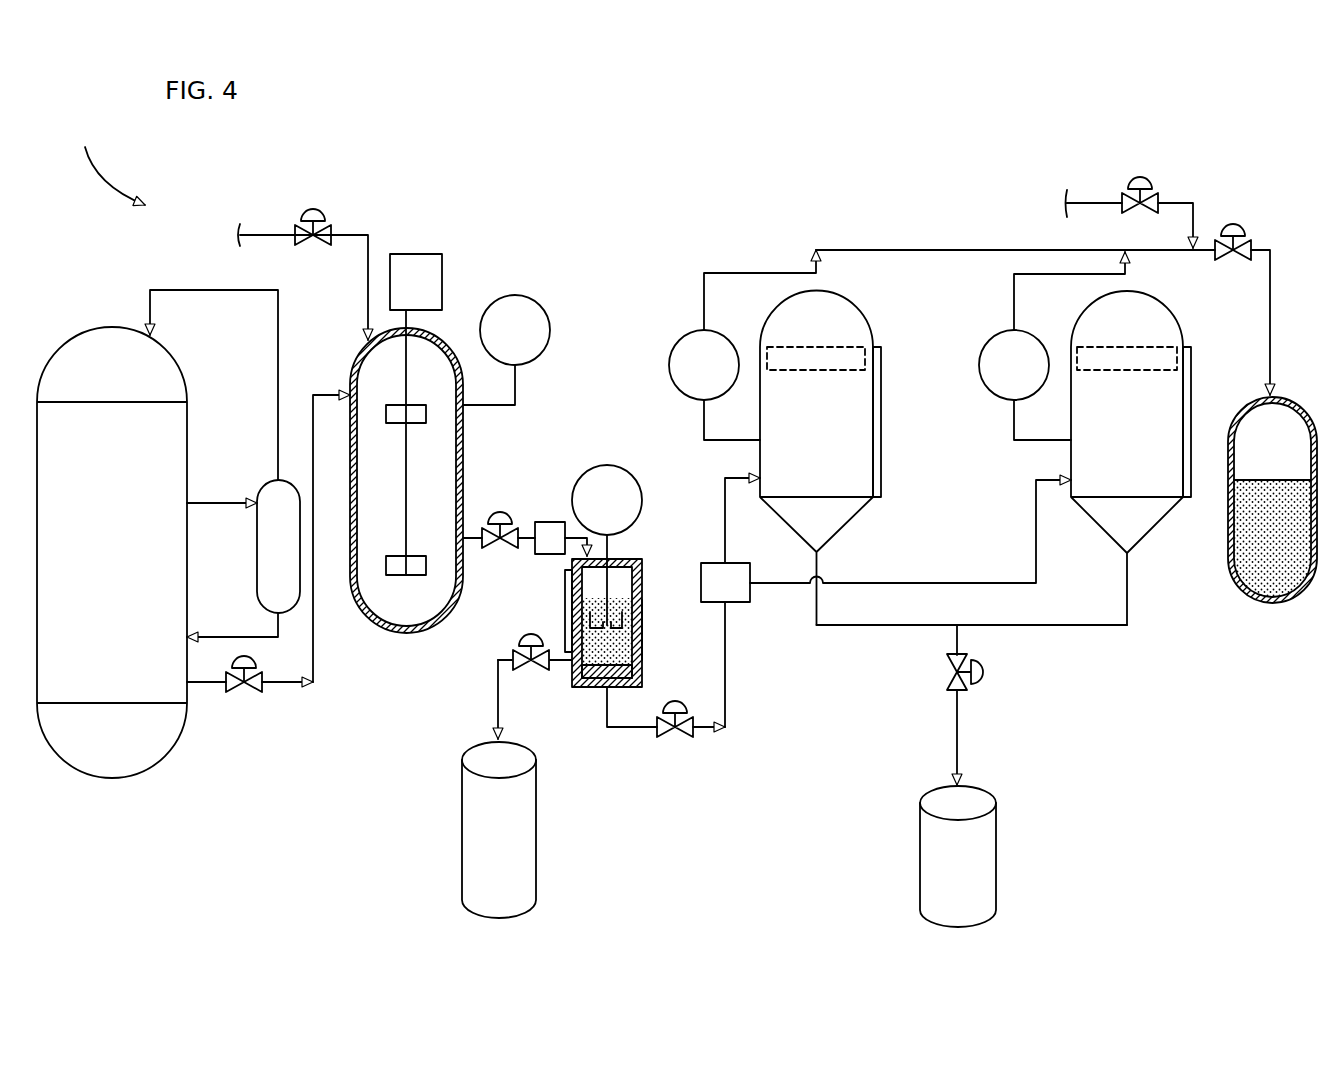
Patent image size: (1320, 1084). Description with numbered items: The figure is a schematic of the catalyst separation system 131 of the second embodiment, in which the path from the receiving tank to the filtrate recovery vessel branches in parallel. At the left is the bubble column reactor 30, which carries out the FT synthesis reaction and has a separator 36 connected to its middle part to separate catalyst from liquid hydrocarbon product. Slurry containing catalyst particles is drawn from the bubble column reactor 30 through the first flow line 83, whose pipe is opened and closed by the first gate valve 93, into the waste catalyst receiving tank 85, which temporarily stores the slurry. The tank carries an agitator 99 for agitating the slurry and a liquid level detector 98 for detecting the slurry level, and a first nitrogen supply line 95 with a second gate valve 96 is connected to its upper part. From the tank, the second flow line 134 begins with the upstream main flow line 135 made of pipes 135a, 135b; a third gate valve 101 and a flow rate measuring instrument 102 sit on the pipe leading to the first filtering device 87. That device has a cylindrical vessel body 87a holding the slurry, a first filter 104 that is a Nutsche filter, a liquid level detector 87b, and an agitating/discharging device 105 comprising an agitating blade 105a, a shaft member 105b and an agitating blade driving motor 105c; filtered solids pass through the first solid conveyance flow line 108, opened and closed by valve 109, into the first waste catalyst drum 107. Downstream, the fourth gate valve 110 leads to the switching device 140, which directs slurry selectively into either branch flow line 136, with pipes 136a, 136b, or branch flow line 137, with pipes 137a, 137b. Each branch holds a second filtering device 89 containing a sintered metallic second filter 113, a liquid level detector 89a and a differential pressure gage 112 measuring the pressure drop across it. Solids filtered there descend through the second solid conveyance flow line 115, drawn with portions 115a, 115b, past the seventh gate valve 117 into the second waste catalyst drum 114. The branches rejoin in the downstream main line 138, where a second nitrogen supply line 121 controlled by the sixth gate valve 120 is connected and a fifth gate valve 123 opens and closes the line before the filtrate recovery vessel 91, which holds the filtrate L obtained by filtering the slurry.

The catalyst separation system 131 is at (107, 141).
The bubble column reactor 30 is at (158, 740).
The separator 36 is at (265, 545).
The first gate valve 93 is at (248, 690).
The first flow line 83 is at (313, 455).
The waste catalyst receiving tank 85 is at (376, 625).
The agitator 99 is at (420, 318).
The first nitrogen supply line 95 is at (352, 233).
The second gate valve 96 is at (306, 246).
The liquid level detector 98 is at (512, 305).
The second flow line 134 is at (615, 412).
The third gate valve 101 is at (478, 528).
The measuring instrument 102 is at (548, 520).
The agitating/discharging device 105 is at (579, 543).
The agitating blade 105a is at (588, 628).
The shaft member 105b is at (583, 603).
The agitating blade driving motor 105c is at (624, 490).
The first filtering device 87 is at (602, 612).
The cylindrical vessel body 87a is at (642, 628).
The liquid level detector 87b is at (566, 590).
The first filter 104 is at (632, 668).
The first solid conveyance flow line 108 is at (498, 688).
The valve 109 is at (541, 672).
The first waste catalyst drum 107 is at (536, 850).
The upstream main flow line 135 is at (470, 707).
The pipe 135a is at (533, 540).
The pipe 135b is at (630, 723).
The fourth gate valve 110 is at (682, 738).
The switching device 140 is at (750, 592).
The differential pressure gage 112 is at (690, 338).
The second filtering device 89 is at (985, 455).
The liquid level detector 89a is at (881, 358).
The second filter 113 is at (793, 356).
The branch flow line 136 is at (868, 388).
The pipe 136a is at (727, 527).
The pipe 136b is at (940, 250).
The branch flow line 137 is at (936, 431).
The pipe 137a is at (991, 544).
The pipe 137b is at (1123, 280).
The second solid conveyance flow line 115 is at (972, 676).
The discharge branch line 115a is at (887, 625).
The discharge branch line 115b is at (1056, 625).
The seventh gate valve 117 is at (947, 672).
The second waste catalyst drum 114 is at (996, 858).
The sixth gate valve 120 is at (1150, 195).
The second nitrogen supply line 121 is at (1187, 203).
The fifth gate valve 123 is at (1246, 240).
The downstream main line 138 is at (1277, 330).
The filtrate recovery vessel 91 is at (1248, 531).
The filtrate L is at (1245, 545).